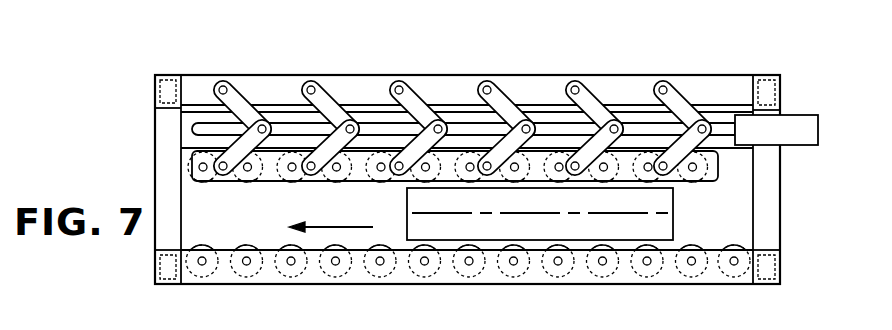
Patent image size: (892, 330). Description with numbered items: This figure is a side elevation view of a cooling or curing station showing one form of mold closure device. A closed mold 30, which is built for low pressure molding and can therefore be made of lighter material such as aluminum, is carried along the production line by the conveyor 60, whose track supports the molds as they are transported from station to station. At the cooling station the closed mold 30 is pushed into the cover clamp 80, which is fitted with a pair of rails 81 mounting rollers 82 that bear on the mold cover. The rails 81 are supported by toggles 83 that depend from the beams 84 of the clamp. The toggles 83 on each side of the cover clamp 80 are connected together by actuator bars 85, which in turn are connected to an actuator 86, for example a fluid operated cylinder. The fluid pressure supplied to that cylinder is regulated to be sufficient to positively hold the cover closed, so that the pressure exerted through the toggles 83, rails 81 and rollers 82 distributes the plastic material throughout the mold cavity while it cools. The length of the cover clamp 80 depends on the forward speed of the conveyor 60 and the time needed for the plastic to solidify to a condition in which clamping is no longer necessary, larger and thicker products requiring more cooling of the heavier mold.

The mold 30 is at (678, 207).
The conveyor 60 is at (737, 289).
The cover clamp 80 is at (703, 63).
The rails 81 is at (272, 181).
The rollers 82 is at (334, 181).
The toggles 83 is at (250, 97).
The beams 84 is at (457, 87).
The actuator bars 85 is at (380, 126).
The actuator 86 is at (793, 150).